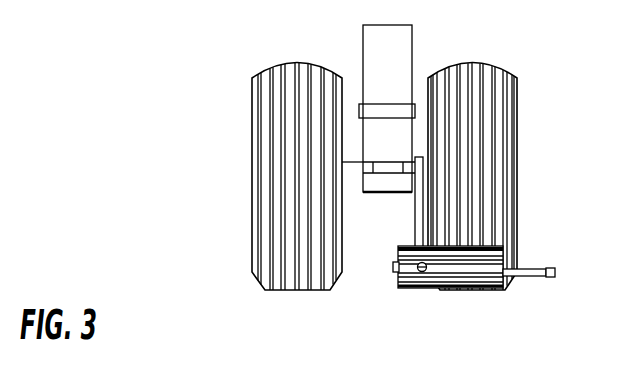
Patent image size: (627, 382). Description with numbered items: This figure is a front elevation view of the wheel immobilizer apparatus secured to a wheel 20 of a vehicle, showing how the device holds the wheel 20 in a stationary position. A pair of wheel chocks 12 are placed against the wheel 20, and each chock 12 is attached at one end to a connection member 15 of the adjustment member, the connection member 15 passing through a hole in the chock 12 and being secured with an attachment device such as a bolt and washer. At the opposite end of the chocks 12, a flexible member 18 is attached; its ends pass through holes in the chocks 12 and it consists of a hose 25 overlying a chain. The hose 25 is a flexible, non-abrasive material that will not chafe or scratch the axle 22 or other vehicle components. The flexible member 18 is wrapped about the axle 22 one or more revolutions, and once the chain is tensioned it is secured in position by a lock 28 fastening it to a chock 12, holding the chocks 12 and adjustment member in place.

The wheel chock 12 is at (418, 289).
The connection member 15 is at (518, 270).
The flexible member 18 is at (419, 150).
The wheel 20 is at (265, 120).
The axle 22 is at (352, 187).
The hose 25 is at (413, 205).
The lock 28 is at (396, 266).